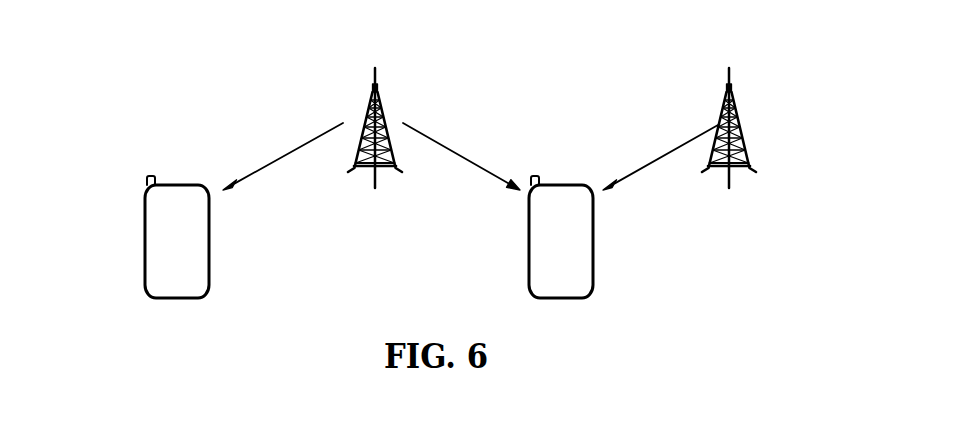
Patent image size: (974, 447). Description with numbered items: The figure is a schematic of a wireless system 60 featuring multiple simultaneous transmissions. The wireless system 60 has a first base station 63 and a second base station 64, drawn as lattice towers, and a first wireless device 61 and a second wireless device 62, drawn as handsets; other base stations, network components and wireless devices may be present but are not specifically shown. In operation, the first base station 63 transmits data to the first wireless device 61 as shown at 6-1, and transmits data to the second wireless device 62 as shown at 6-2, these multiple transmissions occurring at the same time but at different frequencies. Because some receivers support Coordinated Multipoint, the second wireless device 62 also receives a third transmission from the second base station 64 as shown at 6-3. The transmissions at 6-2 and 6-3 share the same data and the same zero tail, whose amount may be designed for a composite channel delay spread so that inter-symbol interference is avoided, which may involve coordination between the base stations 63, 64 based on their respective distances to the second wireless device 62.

The wireless system 60 is at (180, 66).
The first wireless device 61 is at (209, 260).
The second wireless device 62 is at (593, 260).
The first base station 63 is at (379, 90).
The second base station 64 is at (734, 90).
The transmission from first base station to first wireless device 6-1 is at (284, 154).
The transmission from first base station to second wireless device 6-2 is at (467, 155).
The transmission from second base station to second wireless device 6-3 is at (661, 156).